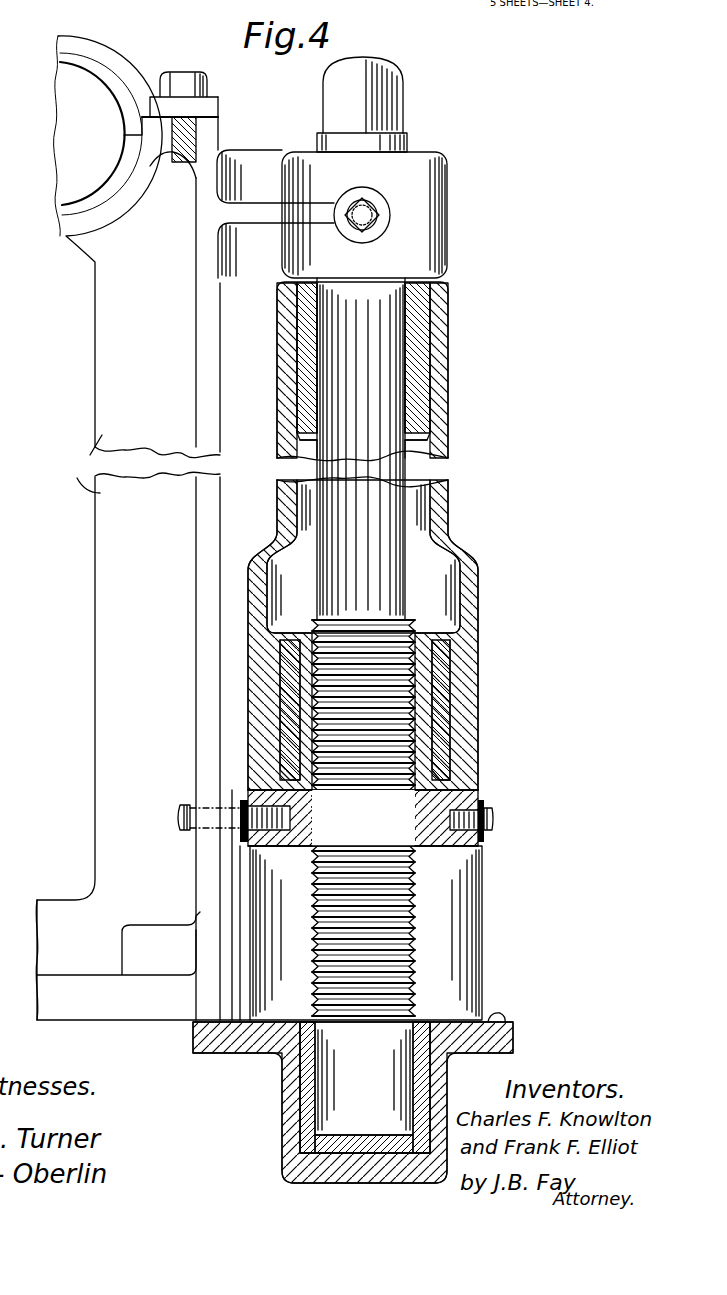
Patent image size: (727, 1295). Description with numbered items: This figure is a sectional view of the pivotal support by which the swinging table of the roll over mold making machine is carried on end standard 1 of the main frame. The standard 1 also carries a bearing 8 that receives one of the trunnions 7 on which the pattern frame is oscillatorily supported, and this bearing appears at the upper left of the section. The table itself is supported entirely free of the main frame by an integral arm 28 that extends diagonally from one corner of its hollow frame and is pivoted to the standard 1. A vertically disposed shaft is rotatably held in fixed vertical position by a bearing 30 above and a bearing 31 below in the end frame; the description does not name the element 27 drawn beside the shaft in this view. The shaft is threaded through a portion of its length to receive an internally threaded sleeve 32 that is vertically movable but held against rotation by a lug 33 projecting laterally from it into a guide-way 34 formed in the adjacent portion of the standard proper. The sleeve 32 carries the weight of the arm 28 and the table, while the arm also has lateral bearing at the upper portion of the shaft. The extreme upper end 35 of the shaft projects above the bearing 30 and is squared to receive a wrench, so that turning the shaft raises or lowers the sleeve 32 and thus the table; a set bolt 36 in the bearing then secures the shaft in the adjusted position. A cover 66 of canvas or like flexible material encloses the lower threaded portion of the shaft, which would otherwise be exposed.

The standard 1 is at (143, 528).
The trunnion 7 is at (60, 178).
The bearing 8 is at (106, 58).
The threaded spindle 27 is at (397, 565).
The arm 28 is at (447, 450).
The bearing 30 is at (430, 218).
The bearing 31 is at (288, 1097).
The internally threaded sleeve 32 is at (463, 733).
The lug 33 is at (236, 840).
The guide-way 34 is at (233, 880).
The upper end of shaft 35 is at (390, 113).
The set bolt 36 is at (372, 226).
The cover 66 is at (482, 887).